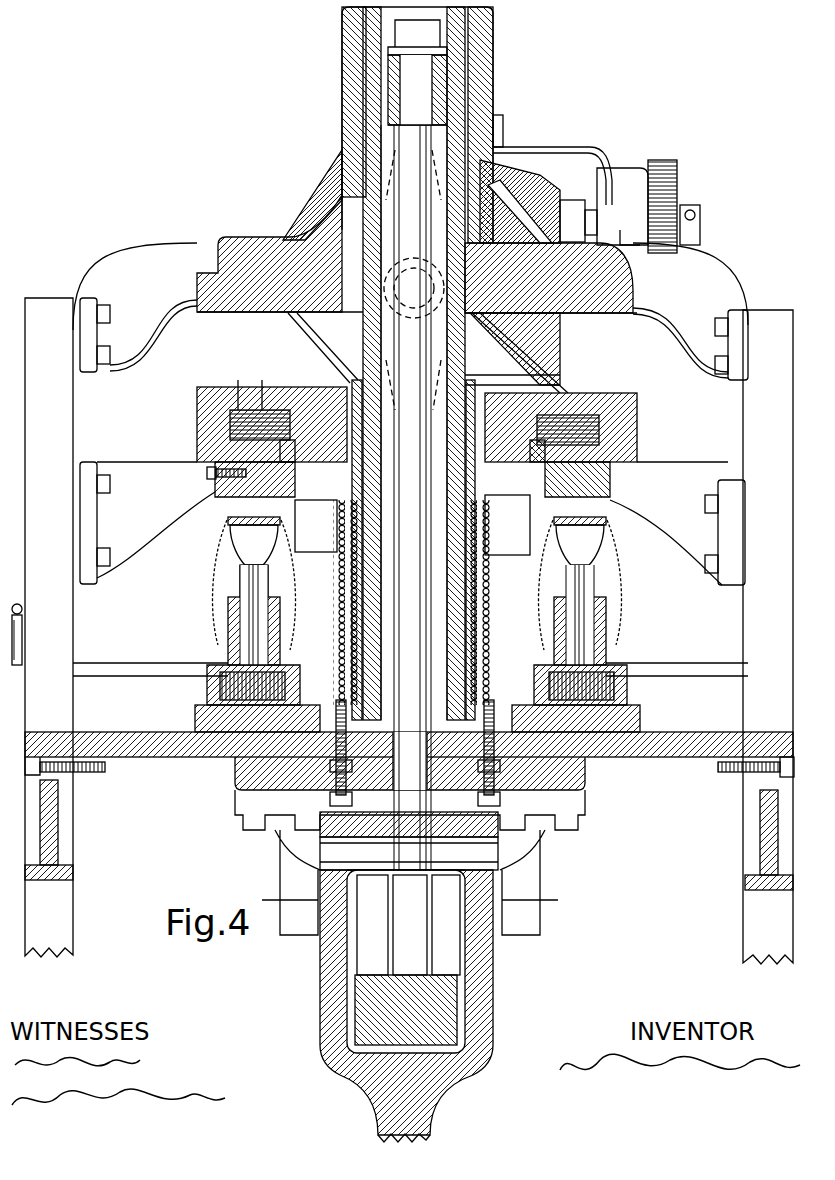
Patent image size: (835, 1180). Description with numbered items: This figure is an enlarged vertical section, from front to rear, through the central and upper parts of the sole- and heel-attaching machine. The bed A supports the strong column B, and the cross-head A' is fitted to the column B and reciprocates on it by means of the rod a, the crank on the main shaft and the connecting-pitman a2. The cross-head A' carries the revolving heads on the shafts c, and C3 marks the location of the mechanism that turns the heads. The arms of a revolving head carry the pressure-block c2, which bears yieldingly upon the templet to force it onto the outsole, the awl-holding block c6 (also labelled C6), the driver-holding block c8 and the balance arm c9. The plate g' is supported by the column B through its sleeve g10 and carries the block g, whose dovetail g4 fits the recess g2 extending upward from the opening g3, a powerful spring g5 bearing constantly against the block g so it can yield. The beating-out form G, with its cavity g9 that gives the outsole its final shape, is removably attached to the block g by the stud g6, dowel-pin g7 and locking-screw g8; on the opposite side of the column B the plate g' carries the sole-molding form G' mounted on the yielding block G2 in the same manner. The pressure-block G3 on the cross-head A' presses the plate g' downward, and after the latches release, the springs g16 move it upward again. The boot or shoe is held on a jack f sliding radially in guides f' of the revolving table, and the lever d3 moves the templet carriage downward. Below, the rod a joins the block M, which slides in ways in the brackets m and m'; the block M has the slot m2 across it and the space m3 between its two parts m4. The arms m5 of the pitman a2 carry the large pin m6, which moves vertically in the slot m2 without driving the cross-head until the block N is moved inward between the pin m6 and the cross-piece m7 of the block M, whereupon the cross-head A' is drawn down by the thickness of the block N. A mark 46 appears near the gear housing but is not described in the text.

The bed A is at (409, 631).
The cross-head A' is at (435, 125).
The rod a is at (414, 438).
The connecting-pitman a2 is at (391, 1127).
The driver-holding block c8 is at (310, 196).
The awl-holding block C6 is at (548, 200).
The pressure-block G3 is at (240, 238).
The location of head-revolving mechanism C3 is at (549, 278).
The column B is at (345, 352).
The balance arm c9 is at (330, 337).
The shaft c is at (551, 349).
The pressure-block c2 is at (530, 372).
The beating-out form G is at (406, 446).
The block g is at (317, 550).
The vertically-movable plate g' is at (184, 388).
The recess g2 is at (197, 430).
The dovetail g4 is at (233, 386).
The spring g5 is at (269, 386).
The opening g3 is at (296, 472).
The dowel-pin g7 is at (300, 486).
The stud g6 is at (207, 472).
The locking-screw g8 is at (215, 485).
The yielding block G2 is at (610, 480).
The sole-molding form G' is at (618, 517).
The cavity g9 is at (316, 526).
The sleeve g10 is at (507, 525).
The springs g16 is at (333, 590).
The jack f is at (416, 591).
The guides f' is at (421, 698).
The lever d3 is at (19, 651).
The bracket m is at (410, 862).
The bracket m' is at (428, 814).
The large pin m6 is at (409, 853).
The slot m2 is at (350, 955).
The block M is at (372, 925).
The block N is at (410, 925).
The parts of block M m4 is at (412, 925).
The space m3 is at (460, 925).
The cross-piece m7 is at (406, 1010).
The arms m5 is at (330, 1000).
The bracket pipe 46 is at (620, 150).
The awl-holding block c6 is at (630, 206).